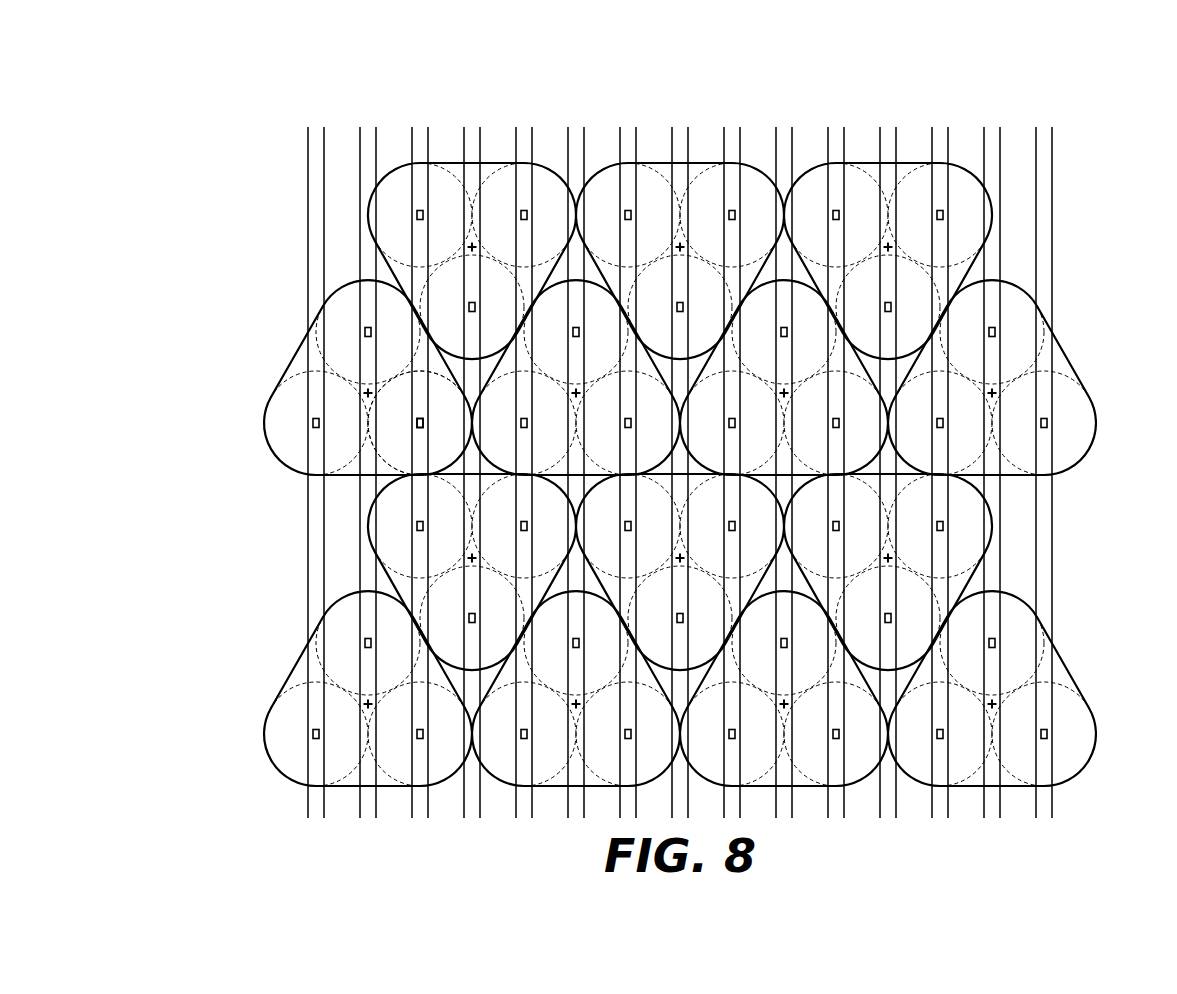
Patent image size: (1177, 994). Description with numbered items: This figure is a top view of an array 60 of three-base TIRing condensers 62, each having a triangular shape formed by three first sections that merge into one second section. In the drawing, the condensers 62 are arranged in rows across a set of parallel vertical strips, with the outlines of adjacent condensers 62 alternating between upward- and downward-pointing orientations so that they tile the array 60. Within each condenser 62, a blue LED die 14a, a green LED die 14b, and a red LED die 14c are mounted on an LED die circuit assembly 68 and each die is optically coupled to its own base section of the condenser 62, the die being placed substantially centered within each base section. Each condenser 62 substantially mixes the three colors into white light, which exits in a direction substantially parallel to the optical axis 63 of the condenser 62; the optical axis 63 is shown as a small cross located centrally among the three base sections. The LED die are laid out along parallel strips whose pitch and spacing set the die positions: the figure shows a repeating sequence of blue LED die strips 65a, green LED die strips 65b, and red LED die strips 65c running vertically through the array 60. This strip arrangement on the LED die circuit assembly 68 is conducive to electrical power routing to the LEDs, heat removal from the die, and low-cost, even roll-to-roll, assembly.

The array 60 is at (185, 90).
The three-base TIRing condenser 62 is at (335, 295).
The optical axis 63 is at (362, 390).
The blue LED die 14a is at (308, 422).
The green LED die 14b is at (360, 332).
The red LED die 14c is at (412, 422).
The blue LED die strips 65a is at (317, 130).
The green LED die strips 65b is at (370, 130).
The red LED die strips 65c is at (422, 130).
The LED die circuit assembly 68 is at (339, 540).